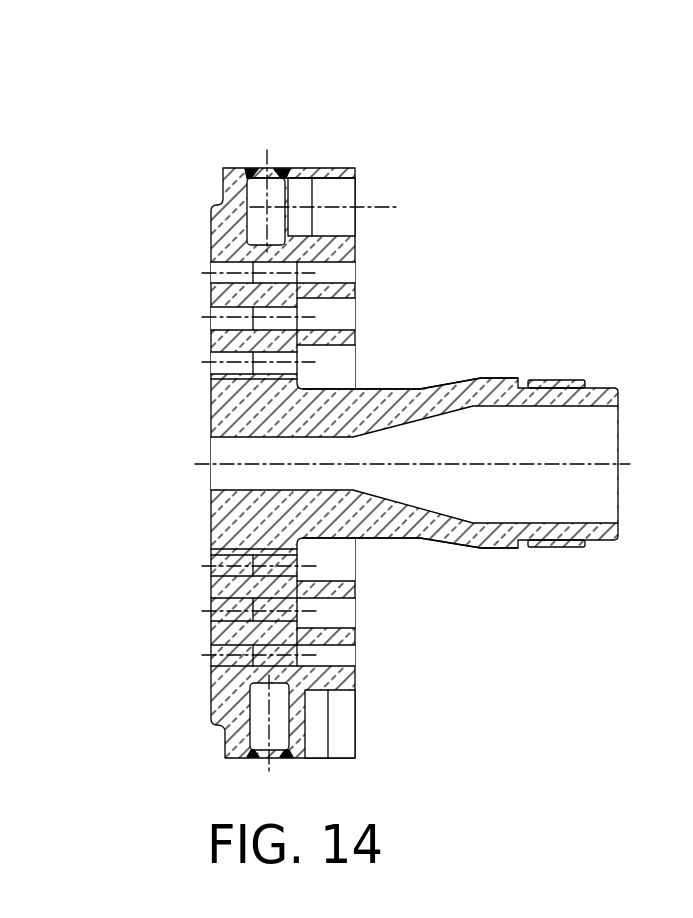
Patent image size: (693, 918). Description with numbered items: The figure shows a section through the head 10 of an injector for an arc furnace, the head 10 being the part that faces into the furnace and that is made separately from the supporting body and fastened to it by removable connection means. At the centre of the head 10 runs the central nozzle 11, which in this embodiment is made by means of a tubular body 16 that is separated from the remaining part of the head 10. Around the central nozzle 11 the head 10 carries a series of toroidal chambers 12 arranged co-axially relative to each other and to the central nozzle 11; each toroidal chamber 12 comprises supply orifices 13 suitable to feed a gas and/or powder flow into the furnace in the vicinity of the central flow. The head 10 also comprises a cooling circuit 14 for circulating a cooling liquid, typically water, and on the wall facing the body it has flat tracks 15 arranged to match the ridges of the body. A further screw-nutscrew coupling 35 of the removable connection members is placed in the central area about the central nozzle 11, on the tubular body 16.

The head 10 is at (123, 141).
The central nozzle 11 is at (243, 491).
The toroidal chambers 12 is at (343, 308).
The supply orifices 13 is at (227, 328).
The cooling circuit 14 is at (255, 193).
The flat tracks 15 is at (353, 633).
The tubular body 16 is at (412, 390).
The screw-nutscrew coupling 35 is at (565, 380).